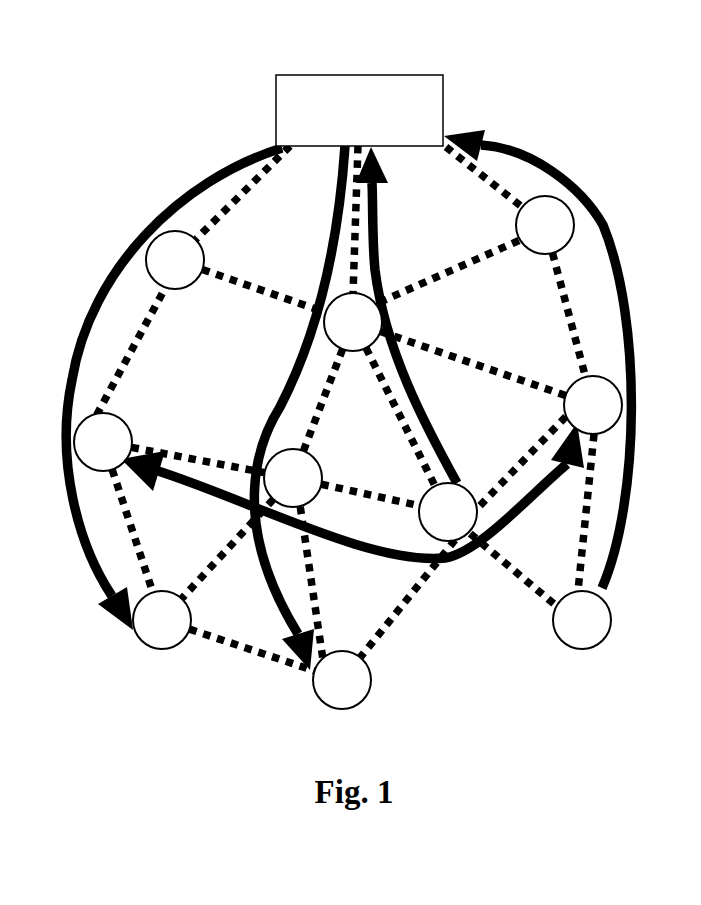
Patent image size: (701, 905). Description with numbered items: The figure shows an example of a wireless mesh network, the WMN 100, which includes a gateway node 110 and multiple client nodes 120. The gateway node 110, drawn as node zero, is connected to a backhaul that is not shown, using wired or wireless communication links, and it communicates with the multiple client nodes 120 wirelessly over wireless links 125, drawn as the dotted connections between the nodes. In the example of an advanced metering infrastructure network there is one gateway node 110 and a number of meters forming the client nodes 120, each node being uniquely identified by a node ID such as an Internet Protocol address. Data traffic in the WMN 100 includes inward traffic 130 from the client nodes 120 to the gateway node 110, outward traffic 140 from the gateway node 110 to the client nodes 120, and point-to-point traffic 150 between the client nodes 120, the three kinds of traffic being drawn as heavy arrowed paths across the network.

The wireless mesh network (WMN) 100 is at (383, 855).
The gateway node 110 is at (392, 76).
The client nodes 120 is at (568, 218).
The wireless communication links 125 is at (496, 194).
The inward traffic 130 is at (436, 418).
The outward traffic 140 is at (205, 172).
The point-to-point traffic 150 is at (460, 557).